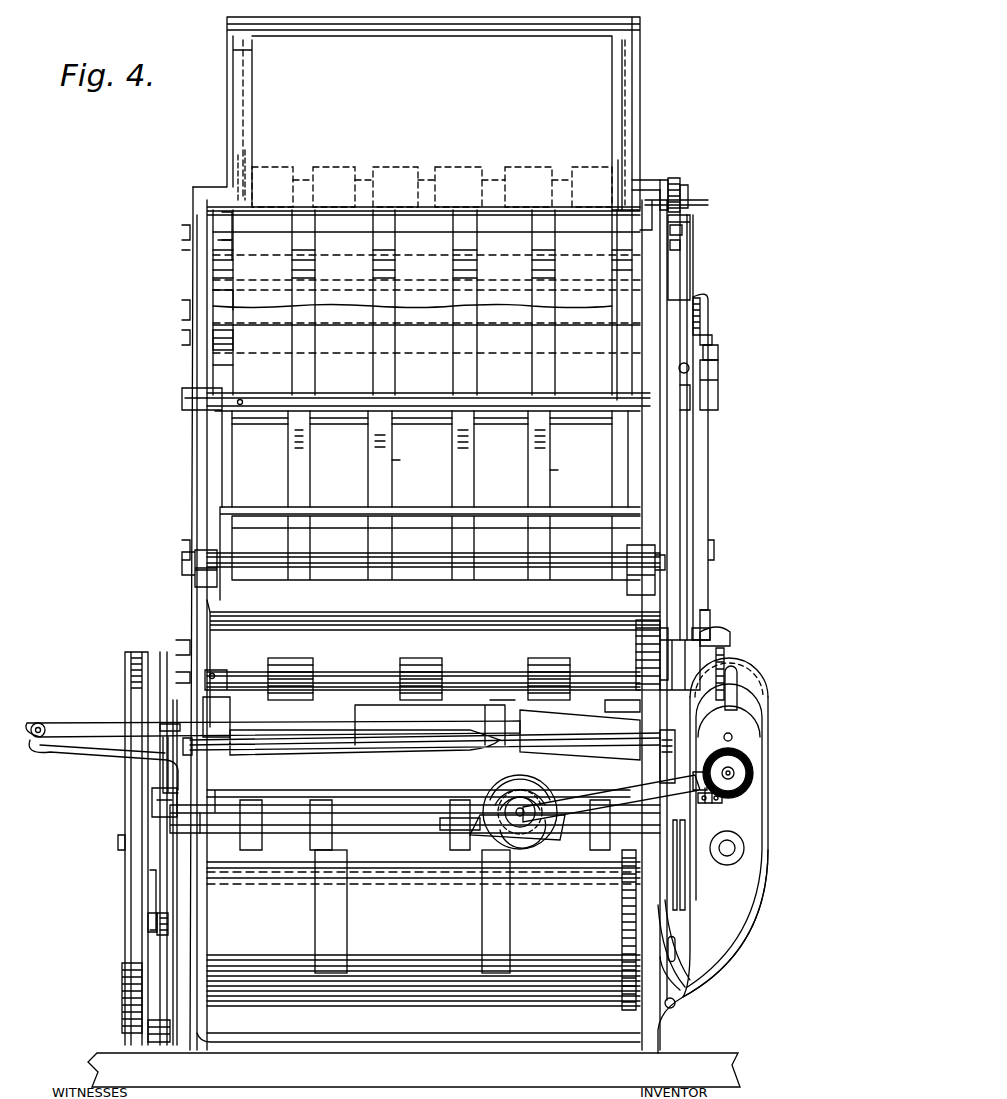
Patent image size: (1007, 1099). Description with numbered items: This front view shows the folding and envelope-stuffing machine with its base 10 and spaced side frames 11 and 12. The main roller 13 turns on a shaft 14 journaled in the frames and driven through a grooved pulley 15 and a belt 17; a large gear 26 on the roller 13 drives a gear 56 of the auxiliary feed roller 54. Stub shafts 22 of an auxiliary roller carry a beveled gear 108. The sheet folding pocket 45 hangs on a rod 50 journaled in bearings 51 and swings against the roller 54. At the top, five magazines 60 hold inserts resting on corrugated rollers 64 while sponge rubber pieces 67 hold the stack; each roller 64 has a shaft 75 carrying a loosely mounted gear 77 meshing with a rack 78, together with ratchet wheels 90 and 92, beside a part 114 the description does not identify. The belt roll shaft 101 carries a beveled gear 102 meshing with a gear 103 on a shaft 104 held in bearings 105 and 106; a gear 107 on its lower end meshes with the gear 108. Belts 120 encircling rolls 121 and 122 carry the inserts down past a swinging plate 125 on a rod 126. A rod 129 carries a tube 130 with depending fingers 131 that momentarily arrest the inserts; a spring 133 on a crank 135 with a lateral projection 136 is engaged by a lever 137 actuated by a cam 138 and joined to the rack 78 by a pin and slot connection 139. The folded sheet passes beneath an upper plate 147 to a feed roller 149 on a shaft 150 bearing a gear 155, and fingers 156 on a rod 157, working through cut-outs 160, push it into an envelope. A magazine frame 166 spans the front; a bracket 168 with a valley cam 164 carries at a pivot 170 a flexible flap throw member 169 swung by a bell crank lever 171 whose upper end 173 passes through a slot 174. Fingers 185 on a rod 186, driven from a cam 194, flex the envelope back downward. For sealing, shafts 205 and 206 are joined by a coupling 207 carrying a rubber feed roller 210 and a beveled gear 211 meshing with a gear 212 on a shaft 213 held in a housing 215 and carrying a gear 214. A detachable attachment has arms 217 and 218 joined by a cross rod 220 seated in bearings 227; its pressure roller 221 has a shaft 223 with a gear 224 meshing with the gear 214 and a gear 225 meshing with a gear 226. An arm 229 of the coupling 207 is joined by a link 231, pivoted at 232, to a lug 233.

The base 10 is at (702, 1070).
The side frame 11 is at (190, 492).
The side frame 12 is at (660, 490).
The main roller 13 is at (333, 1005).
The shaft 14 is at (118, 842).
The grooved pulley 15 is at (125, 665).
The belt 17 is at (125, 950).
The stub shafts 22 is at (665, 660).
The large gear 26 is at (622, 928).
The sheet folding pocket 45 is at (412, 522).
The rod 50 is at (497, 564).
The bearings 51 is at (195, 576).
The auxiliary feed roller 54 is at (437, 622).
The gear 56 is at (636, 650).
The magazines 60 is at (252, 107).
The roller 64 is at (445, 172).
The sponge rubber pieces 67 is at (246, 165).
The shaft 75 is at (650, 192).
The gear 77 is at (676, 178).
The rack 78 is at (680, 236).
The ratchet wheel 90 is at (688, 192).
The ratchet wheel 92 is at (665, 182).
The shaft 101 is at (225, 305).
The beveled gear 102 is at (700, 318).
The beveled gear 103 is at (712, 338).
The shaft 104 is at (708, 456).
The bearing 105 is at (718, 368).
The bearing 106 is at (706, 605).
The beveled gear 107 is at (710, 630).
The beveled gear 108 is at (720, 640).
The slide 114 is at (685, 272).
The belts 120 is at (280, 300).
The roll 121 is at (225, 218).
The roll 122 is at (225, 245).
The plate 125 is at (228, 364).
The rod 126 is at (215, 338).
The rod 129 is at (182, 400).
The tube 130 is at (428, 398).
The fingers 131 is at (309, 476).
The spring 133 is at (700, 374).
The crank 135 is at (700, 392).
The lateral projection 136 is at (718, 352).
The lever 137 is at (693, 514).
The cam 138 is at (700, 860).
The pin and slot connection 139 is at (690, 228).
The upper plate 147 is at (597, 746).
The feed roller 149 is at (305, 653).
The shaft 150 is at (365, 680).
The gear 155 is at (618, 690).
The fingers 156 is at (316, 915).
The rod 157 is at (428, 964).
The cut-outs 160 is at (350, 722).
The valley cam 164 is at (163, 768).
The frame 166 is at (412, 760).
The bracket 168 is at (78, 757).
The flexible flap throw member 169 is at (76, 730).
The pivot 170 is at (38, 723).
The bell crank lever 171 is at (122, 990).
The upper end 173 is at (165, 722).
The slot 174 is at (183, 748).
The fingers 185 is at (255, 845).
The rod 186 is at (368, 805).
The cam 194 is at (690, 884).
The shaft 205 is at (285, 800).
The shaft 206 is at (625, 838).
The coupling 207 is at (535, 830).
The rubber feed roller 210 is at (500, 790).
The beveled gear 211 is at (492, 838).
The beveled gear 212 is at (548, 826).
The shaft 213 is at (700, 804).
The beveled gear 214 is at (745, 790).
The housing 215 is at (588, 804).
The arm 217 is at (725, 938).
The arm 218 is at (682, 925).
The cross rod 220 is at (676, 1004).
The pressure roller 221 is at (755, 716).
The shaft 223 is at (735, 776).
The beveled gear 224 is at (754, 770).
The beveled gear 225 is at (745, 668).
The beveled gear 226 is at (725, 655).
The bearings 227 is at (668, 1016).
The arm 229 is at (152, 803).
The link 231 is at (150, 890).
The pivot 232 is at (148, 922).
The lug 233 is at (168, 922).